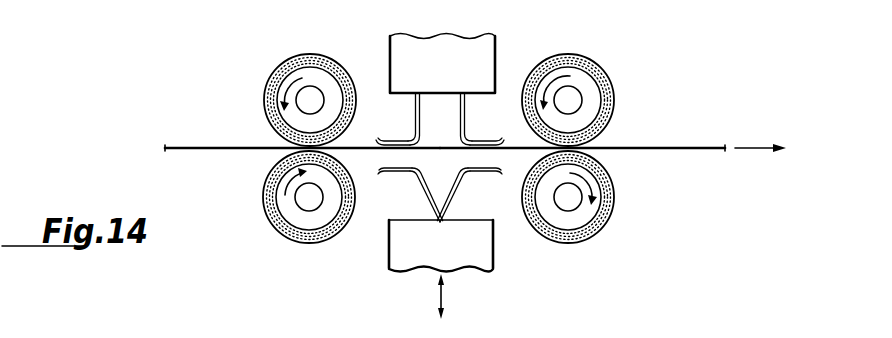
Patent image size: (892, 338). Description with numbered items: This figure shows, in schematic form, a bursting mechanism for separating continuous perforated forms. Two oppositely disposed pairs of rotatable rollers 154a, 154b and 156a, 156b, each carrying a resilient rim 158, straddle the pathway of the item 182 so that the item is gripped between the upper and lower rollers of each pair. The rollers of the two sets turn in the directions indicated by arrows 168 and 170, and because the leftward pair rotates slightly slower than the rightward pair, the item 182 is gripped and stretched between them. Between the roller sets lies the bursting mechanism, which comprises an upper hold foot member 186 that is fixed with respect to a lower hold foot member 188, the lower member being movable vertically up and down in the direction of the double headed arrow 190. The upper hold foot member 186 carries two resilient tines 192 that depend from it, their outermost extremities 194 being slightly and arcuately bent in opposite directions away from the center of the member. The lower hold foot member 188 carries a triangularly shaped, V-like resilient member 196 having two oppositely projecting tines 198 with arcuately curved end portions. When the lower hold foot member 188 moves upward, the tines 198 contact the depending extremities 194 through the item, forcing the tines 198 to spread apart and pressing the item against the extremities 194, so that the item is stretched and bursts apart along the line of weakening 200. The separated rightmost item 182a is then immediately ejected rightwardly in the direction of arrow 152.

The arrow 152 is at (758, 145).
The rotatable roller 154a is at (320, 77).
The rotatable roller 154b is at (298, 218).
The rotatable roller 156a is at (587, 85).
The rotatable roller 156b is at (568, 220).
The resilient rim 158 is at (268, 112).
The arrow 168 is at (285, 196).
The arrow 170 is at (593, 187).
The item 182 is at (185, 146).
The rightmost item 182a is at (683, 145).
The upper hold foot member 186 is at (486, 50).
The lower hold foot member 188 is at (481, 281).
The double headed arrow 190 is at (438, 294).
The resilient members or tines 192 is at (420, 108).
The outermost extremities 194 is at (392, 142).
The triangularly shaped resilient member 196 is at (431, 216).
The tines 198 is at (402, 172).
The line of weakening 200 is at (440, 146).